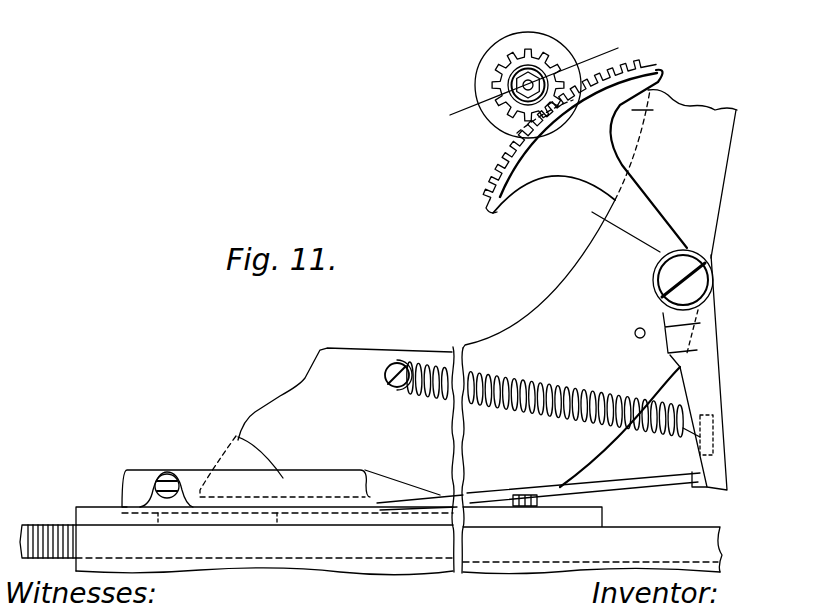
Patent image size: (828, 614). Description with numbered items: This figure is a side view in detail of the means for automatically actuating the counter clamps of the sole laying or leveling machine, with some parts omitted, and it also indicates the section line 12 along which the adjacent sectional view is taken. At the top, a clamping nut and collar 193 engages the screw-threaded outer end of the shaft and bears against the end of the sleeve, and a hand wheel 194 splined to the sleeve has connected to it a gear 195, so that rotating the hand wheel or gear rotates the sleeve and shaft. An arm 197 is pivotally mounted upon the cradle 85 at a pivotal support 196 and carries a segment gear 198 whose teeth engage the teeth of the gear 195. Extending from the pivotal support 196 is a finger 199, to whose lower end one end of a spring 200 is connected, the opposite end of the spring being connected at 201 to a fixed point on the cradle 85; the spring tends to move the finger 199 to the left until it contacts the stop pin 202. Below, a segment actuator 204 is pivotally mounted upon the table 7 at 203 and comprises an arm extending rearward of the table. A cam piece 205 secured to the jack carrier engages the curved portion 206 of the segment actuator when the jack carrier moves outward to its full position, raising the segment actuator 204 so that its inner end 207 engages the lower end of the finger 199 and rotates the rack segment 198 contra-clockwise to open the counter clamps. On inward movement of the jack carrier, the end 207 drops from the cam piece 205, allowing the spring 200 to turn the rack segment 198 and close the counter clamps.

The clamping nut and collar 193 is at (78, 7).
The hand wheel 194 is at (542, 33).
The gear 195 is at (518, 53).
The shaft 12 is at (535, 84).
The segment gear 198 is at (500, 157).
The arm 197 is at (592, 208).
The cradle 85 is at (718, 172).
The pivotal support 196 is at (707, 262).
The stop pin 202 is at (639, 328).
The finger 199 is at (705, 377).
The spring 200 is at (627, 373).
The spring connection point 201 is at (397, 362).
The segment actuator 204 is at (238, 437).
The pivot 203 is at (186, 452).
The curved portion 206 is at (363, 470).
The cam piece 205 is at (273, 513).
The table 7 is at (337, 572).
The inner end 207 is at (693, 490).